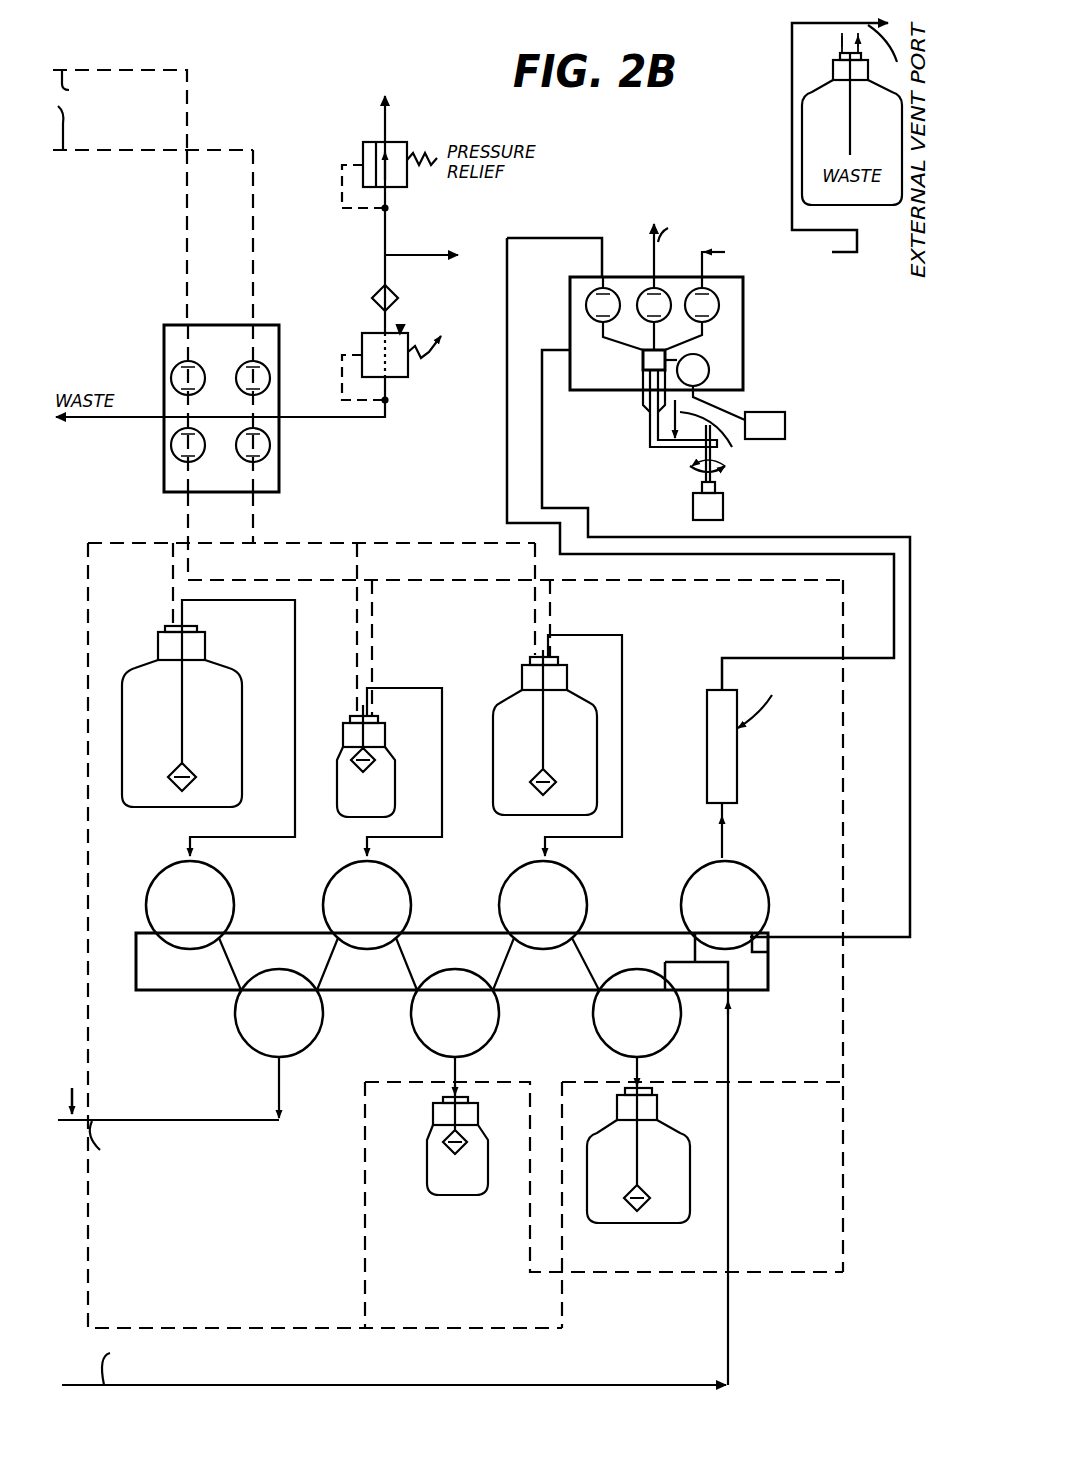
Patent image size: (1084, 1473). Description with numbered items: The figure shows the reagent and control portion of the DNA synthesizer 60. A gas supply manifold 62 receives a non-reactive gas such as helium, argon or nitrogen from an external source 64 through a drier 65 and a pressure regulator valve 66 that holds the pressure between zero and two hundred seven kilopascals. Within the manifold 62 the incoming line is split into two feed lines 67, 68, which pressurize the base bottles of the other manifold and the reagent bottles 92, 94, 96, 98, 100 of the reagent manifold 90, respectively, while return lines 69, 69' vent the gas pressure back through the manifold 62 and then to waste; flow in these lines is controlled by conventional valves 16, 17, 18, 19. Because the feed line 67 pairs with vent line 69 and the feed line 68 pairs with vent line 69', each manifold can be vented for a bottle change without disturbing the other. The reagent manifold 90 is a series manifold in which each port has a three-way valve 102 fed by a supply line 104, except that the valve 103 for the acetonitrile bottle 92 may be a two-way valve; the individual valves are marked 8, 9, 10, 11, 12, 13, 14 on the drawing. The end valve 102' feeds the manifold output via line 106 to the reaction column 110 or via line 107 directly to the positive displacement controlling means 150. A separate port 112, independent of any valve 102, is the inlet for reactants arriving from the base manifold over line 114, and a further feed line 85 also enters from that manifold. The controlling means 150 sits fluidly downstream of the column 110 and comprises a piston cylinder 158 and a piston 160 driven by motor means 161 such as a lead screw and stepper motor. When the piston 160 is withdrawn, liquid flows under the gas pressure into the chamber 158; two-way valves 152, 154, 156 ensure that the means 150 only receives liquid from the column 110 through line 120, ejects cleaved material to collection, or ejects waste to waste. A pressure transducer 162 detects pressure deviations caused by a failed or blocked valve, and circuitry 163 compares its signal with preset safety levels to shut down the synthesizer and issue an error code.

The DNA synthesizer 60 is at (218, 126).
The gas supply manifold 62 is at (218, 394).
The external source 64 is at (398, 252).
The drier 65 is at (372, 292).
The pressure regulator valve 66 is at (397, 380).
The gas feed line 67 is at (256, 204).
The gas feed line 68 is at (255, 528).
The return line 69 is at (153, 95).
The return line 69' is at (158, 559).
The valve 16 is at (272, 445).
The valve 17 is at (272, 380).
The valve 18 is at (174, 456).
The valve 19 is at (170, 380).
The three-way valve 8 is at (140, 858).
The three-way valve 9 is at (367, 905).
The three-way valve 10 is at (455, 1013).
The three-way valve 11 is at (543, 905).
The three-way valve 12 is at (637, 1013).
The three-way valve 13 is at (279, 1013).
The three-way valve 14 is at (770, 862).
The feed line 85 is at (157, 1113).
The reagent supply manifold 90 is at (160, 994).
The reagent bottle 92 is at (240, 684).
The reagent bottle 94 is at (392, 754).
The reagent bottle 96 is at (600, 750).
The reagent bottle 98 is at (690, 1215).
The reagent bottle 100 is at (427, 1168).
The three-way valve 102 is at (429, 963).
The three-way valve 102' is at (747, 897).
The two-way valve 103 is at (165, 898).
The supply line 104 is at (343, 839).
The line 106 is at (727, 842).
The line 107 is at (784, 936).
The reaction column 110 is at (707, 700).
The port 112 is at (731, 995).
The line 114 is at (318, 1385).
The line 120 is at (818, 656).
The positive displacement controlling means 150 is at (606, 394).
The two-way valve 152 is at (634, 268).
The two-way valve 154 is at (685, 268).
The two-way valve 156 is at (721, 306).
The piston cylinder 158 is at (641, 398).
The piston 160 is at (669, 452).
The motor means 161 is at (724, 505).
The pressure transducer 162 is at (711, 368).
The circuitry 163 is at (739, 412).